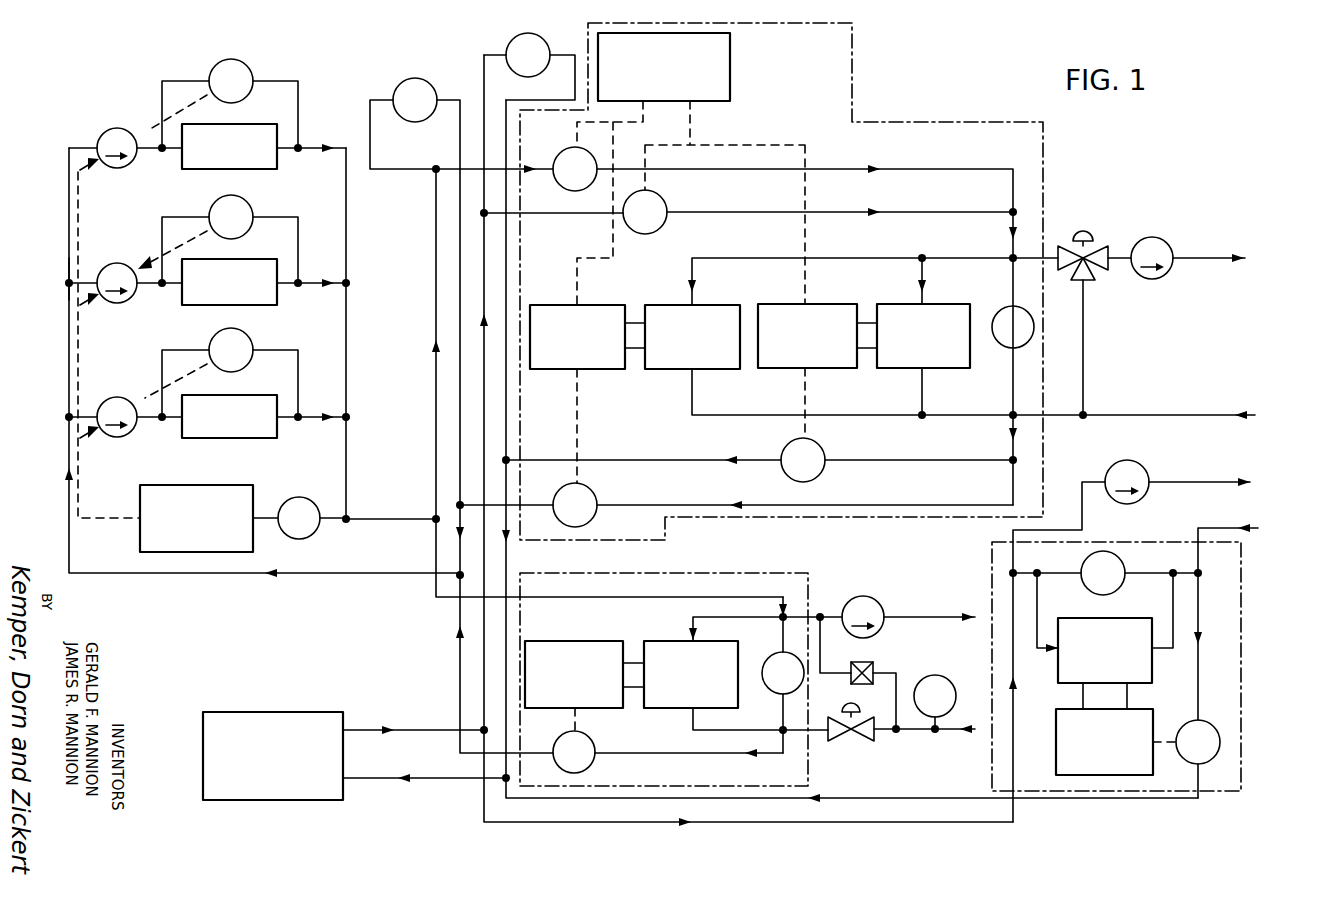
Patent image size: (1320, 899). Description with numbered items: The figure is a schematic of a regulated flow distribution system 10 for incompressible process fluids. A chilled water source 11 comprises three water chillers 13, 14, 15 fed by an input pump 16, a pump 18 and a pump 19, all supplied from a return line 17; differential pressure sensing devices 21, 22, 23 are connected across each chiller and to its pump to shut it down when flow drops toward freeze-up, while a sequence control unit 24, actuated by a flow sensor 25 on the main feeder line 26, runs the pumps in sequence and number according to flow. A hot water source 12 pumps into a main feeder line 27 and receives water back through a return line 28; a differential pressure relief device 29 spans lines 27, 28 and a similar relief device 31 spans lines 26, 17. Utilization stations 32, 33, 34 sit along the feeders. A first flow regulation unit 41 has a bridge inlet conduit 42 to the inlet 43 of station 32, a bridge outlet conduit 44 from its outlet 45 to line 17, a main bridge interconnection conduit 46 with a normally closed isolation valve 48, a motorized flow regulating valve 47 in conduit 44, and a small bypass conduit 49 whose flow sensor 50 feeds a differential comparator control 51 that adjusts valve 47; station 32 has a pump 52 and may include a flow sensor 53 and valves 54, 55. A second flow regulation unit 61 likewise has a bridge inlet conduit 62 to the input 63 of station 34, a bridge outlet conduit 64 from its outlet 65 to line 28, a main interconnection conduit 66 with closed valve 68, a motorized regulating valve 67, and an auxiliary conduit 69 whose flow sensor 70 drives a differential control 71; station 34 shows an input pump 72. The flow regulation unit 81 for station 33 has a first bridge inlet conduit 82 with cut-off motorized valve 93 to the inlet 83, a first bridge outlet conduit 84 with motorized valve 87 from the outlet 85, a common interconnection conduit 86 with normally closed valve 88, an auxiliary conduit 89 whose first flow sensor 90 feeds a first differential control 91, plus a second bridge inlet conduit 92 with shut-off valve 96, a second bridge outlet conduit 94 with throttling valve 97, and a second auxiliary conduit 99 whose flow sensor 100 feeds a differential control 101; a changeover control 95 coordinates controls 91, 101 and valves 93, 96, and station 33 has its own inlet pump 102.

The regulated flow distribution system 10 is at (405, 614).
The chilled water source 11 is at (125, 118).
The hot water source 12 is at (250, 710).
The water chiller 13 is at (262, 170).
The water chiller 14 is at (266, 306).
The water chiller 15 is at (245, 439).
The input pump 16 is at (103, 135).
The return line 17 is at (69, 260).
The pump 18 is at (122, 263).
The pump 19 is at (116, 397).
The differential pressure sensing device 21 is at (248, 66).
The differential pressure sensing device 22 is at (213, 200).
The differential pressure sensing device 23 is at (213, 338).
The sequence control unit 24 is at (181, 482).
The flow sensor 25 is at (304, 498).
The main feeder line 26 is at (432, 222).
The main feeder line 27 is at (484, 275).
The return line 28 is at (506, 420).
The differential pressure relief device 29 is at (509, 42).
The pressure differential relief device 31 is at (412, 78).
The utilization station 32 is at (842, 596).
The utilization station 33 is at (1138, 218).
The utilization station 34 is at (1068, 490).
The first flow regulation unit 41 is at (668, 573).
The bridge inlet conduit 42 is at (632, 598).
The inlet 43 is at (820, 610).
The bridge outlet conduit 44 is at (666, 756).
The outlet 45 is at (800, 732).
The main bridge interconnection conduit 46 is at (778, 642).
The flow regulating valve 47 is at (592, 742).
The isolation valve 48 is at (769, 688).
The bypass bridge interconnection conduit 49 is at (688, 626).
The flow sensor 50 is at (670, 709).
The differential comparator control 51 is at (588, 640).
The pump 52 is at (878, 600).
The flow sensor 53 is at (955, 688).
The valve 54 is at (846, 744).
The valve 55 is at (875, 664).
The second flow regulation unit 61 is at (1215, 793).
The bridge inlet conduit 62 is at (1015, 720).
The input 63 is at (1086, 512).
The bridge outlet conduit 64 is at (1200, 624).
The outlet 65 is at (1214, 527).
The main bridge interconnection conduit 66 is at (1040, 570).
The motorized flow regulating valve 67 is at (1186, 724).
The valve 68 is at (1128, 568).
The auxiliary bridge interconnection conduit 69 is at (1040, 622).
The flow sensor 70 is at (1124, 618).
The differential control 71 is at (1056, 760).
The input pump 72 is at (1148, 469).
The flow regulation unit 81 is at (932, 121).
The first bridge inlet conduit 82 is at (698, 171).
The inlet 83 is at (1054, 252).
The first bridge outlet conduit 84 is at (935, 507).
The outlet 85 is at (1040, 413).
The main bridge interconnection conduit 86 is at (1010, 292).
The motorized valve 87 is at (597, 498).
The normally closed valve 88 is at (1006, 350).
The auxiliary bridge interconnection conduit 89 is at (694, 262).
The first flow sensor 90 is at (704, 371).
The first differential control 91 is at (590, 371).
The second bridge inlet conduit 92 is at (735, 214).
The motorized valve 93 is at (558, 152).
The second bridge outlet conduit 94 is at (904, 462).
The changeover control 95 is at (732, 70).
The motorized shut-off valve 96 is at (645, 235).
The adjustable throttling valve 97 is at (782, 454).
The second auxiliary bridge interconnection conduit 99 is at (928, 290).
The second flow sensor 100 is at (898, 370).
The differential control 101 is at (800, 304).
The inlet pump 102 is at (1173, 250).